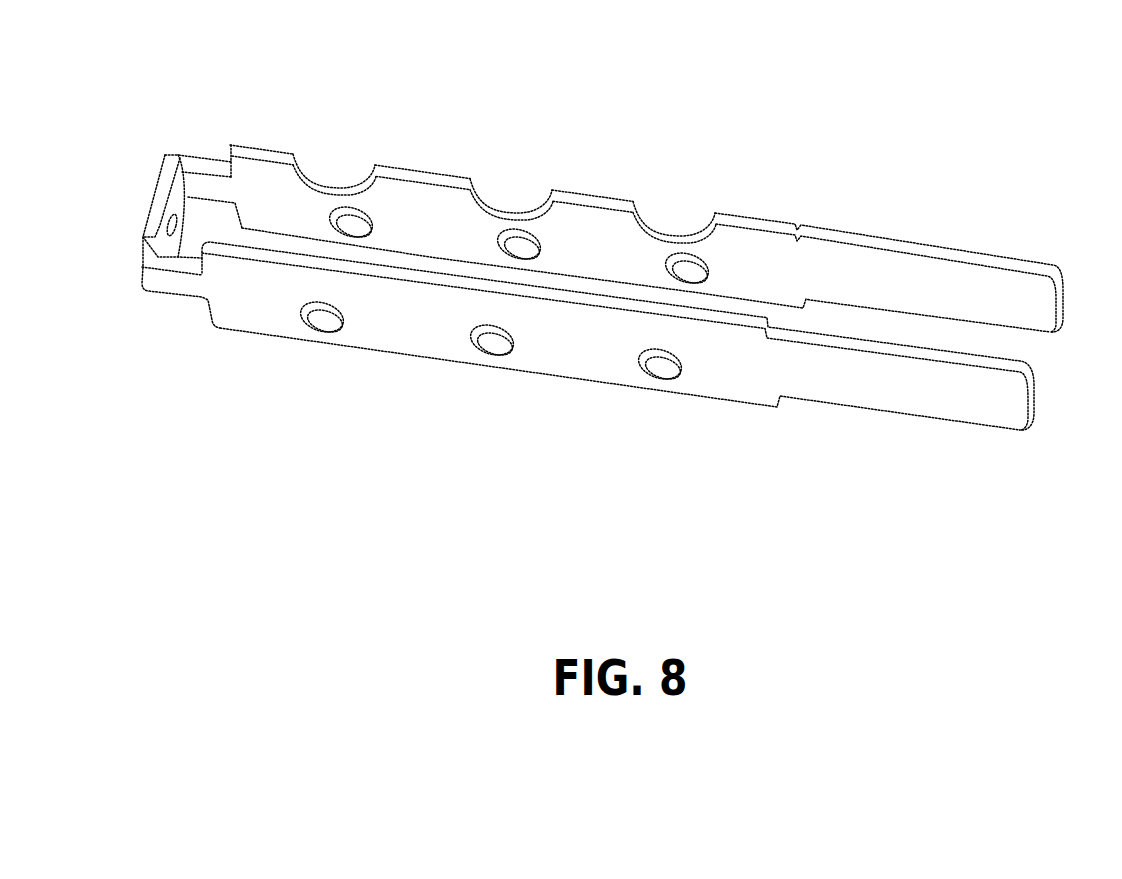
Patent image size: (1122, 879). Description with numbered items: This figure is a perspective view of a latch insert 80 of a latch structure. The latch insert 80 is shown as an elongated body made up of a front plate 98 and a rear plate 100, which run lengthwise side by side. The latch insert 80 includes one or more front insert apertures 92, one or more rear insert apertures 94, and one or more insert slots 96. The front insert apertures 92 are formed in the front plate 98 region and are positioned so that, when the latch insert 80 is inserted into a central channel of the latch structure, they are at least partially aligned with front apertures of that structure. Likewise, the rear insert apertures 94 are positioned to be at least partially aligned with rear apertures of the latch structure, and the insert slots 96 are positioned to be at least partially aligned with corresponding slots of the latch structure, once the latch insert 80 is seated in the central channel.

The latch insert 80 is at (328, 432).
The front insert apertures 92 is at (685, 263).
The rear insert apertures 94 is at (330, 315).
The insert slots 96 is at (345, 187).
The front plate 98 is at (827, 265).
The rear plate 100 is at (860, 372).